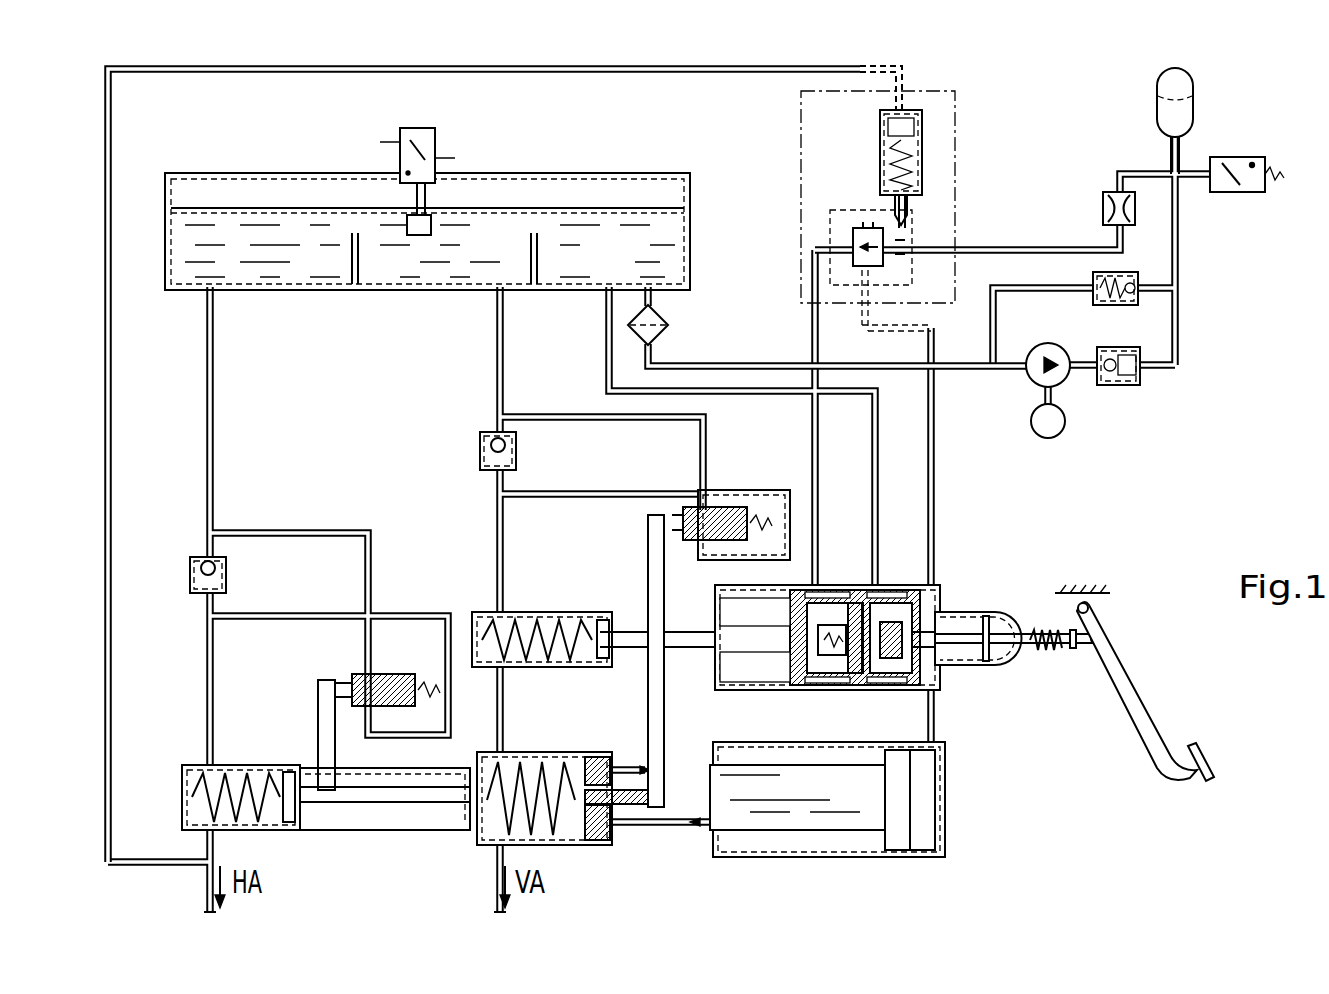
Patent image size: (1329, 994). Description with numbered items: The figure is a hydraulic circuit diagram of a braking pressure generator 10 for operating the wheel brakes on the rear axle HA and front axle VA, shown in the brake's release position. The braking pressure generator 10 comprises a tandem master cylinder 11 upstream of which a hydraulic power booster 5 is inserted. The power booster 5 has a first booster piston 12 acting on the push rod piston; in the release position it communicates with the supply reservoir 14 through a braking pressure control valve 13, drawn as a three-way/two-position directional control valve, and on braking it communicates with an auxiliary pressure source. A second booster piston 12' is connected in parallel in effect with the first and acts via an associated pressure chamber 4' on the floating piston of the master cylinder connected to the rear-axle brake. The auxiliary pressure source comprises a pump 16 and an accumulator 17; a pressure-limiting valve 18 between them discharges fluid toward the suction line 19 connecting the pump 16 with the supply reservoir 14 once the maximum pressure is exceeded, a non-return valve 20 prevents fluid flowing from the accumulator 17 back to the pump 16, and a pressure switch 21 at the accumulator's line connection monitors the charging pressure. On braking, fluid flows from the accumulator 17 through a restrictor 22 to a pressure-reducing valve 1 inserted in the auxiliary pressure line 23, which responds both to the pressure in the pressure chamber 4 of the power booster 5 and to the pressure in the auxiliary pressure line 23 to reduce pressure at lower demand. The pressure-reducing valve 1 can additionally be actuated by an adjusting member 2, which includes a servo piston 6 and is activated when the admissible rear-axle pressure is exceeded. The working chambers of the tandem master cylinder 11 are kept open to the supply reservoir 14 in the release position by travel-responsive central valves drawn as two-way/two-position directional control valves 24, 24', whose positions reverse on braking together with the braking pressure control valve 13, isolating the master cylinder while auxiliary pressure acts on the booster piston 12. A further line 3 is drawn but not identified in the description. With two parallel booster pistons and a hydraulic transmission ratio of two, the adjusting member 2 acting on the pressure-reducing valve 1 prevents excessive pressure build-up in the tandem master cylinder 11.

The pressure-reducing valve 1 is at (858, 228).
The adjusting member 2 is at (878, 150).
The return line 3 is at (113, 512).
The pressure chamber 4 is at (1018, 676).
The pressure chamber 4' is at (855, 799).
The hydraulic power booster 5 is at (808, 690).
The servo piston 6 is at (923, 135).
The braking pressure generator 10 is at (944, 587).
The tandem master cylinder 11 is at (533, 752).
The first booster piston 12 is at (733, 609).
The second booster piston 12' is at (797, 838).
The braking pressure control valve 13 is at (790, 663).
The supply reservoir 14 is at (614, 273).
The pump 16 is at (1062, 383).
The accumulator 17 is at (1195, 90).
The pressure-limiting valve 18 is at (1094, 300).
The suction line 19 is at (735, 366).
The non-return valve 20 is at (1128, 386).
The pressure switch 21 is at (1248, 193).
The restrictor 22 is at (1103, 208).
The auxiliary pressure line 23 is at (993, 248).
The two-way/two-position directional control valve 24 is at (362, 672).
The two-way/two-position directional control valve 24' is at (731, 493).